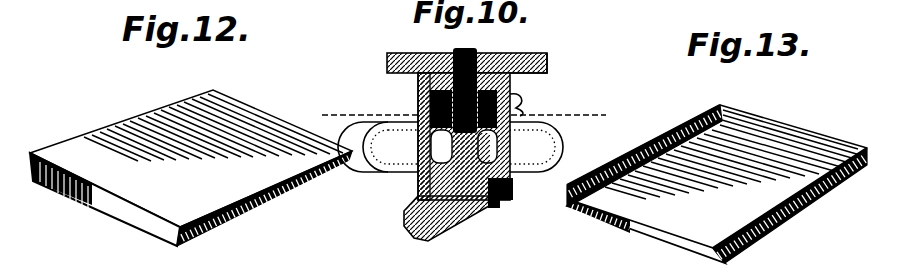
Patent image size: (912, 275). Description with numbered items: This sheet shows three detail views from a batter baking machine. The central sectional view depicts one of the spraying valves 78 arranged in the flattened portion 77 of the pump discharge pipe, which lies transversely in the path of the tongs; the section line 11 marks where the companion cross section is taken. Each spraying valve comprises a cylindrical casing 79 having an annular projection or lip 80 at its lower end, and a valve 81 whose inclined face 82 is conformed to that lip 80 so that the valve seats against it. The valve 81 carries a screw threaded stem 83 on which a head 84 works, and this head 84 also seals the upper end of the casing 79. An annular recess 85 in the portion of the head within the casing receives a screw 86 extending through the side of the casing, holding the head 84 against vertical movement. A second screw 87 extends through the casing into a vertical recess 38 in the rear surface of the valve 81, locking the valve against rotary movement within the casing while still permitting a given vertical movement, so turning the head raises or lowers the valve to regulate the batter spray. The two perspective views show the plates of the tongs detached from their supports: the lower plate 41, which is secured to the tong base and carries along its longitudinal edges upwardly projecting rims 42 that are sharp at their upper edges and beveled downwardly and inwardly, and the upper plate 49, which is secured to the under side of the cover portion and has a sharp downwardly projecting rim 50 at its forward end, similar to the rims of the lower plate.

In FIG. 10, the section line 11 is at (464, 108).
In FIG. 10, the vertical recess 38 is at (498, 210).
In FIG. 13, the plate 41 is at (717, 184).
In FIG. 13, the upwardly projecting rims 42 is at (660, 147).
In FIG. 12, the plate 49 is at (191, 158).
In FIG. 12, the rim 50 is at (119, 208).
In FIG. 10, the flattened portion 77 is at (380, 173).
In FIG. 10, the spraying valves 78 is at (457, 56).
In FIG. 10, the cylindrical casing 79 is at (513, 143).
In FIG. 10, the annular projection or lip 80 is at (412, 207).
In FIG. 10, the valve 81 is at (461, 222).
In FIG. 10, the inclined face 82 is at (410, 237).
In FIG. 10, the screw threaded stem 83 is at (478, 53).
In FIG. 10, the head 84 is at (528, 58).
In FIG. 10, the annular recess 85 is at (418, 106).
In FIG. 10, the screw 86 is at (517, 101).
In FIG. 10, the screw 87 is at (512, 197).